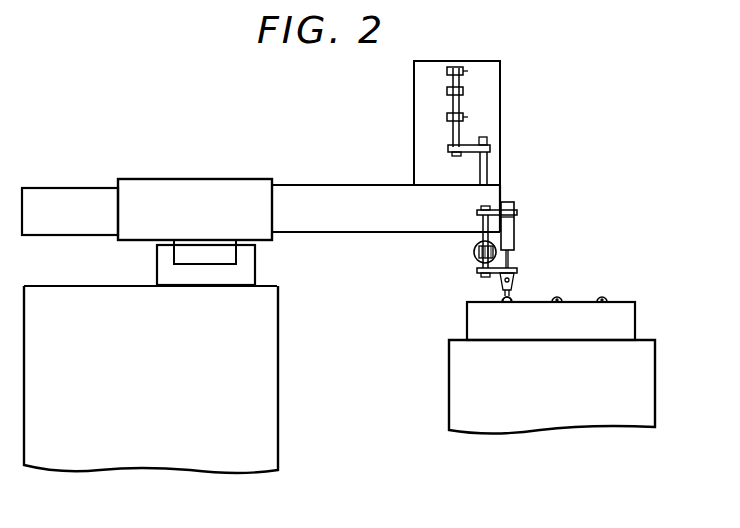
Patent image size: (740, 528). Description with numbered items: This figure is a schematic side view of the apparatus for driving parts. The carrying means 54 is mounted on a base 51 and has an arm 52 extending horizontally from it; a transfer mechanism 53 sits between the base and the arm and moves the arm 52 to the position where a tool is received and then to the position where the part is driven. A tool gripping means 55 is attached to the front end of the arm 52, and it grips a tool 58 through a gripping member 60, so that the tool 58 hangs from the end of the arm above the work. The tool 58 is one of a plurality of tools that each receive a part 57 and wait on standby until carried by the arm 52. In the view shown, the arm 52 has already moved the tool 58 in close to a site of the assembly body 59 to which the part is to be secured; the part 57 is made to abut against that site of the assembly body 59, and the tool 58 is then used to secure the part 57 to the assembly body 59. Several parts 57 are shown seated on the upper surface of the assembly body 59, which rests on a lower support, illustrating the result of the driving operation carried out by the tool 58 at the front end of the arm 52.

The base 51 is at (279, 346).
The arm 52 is at (334, 185).
The transfer mechanism 53 is at (256, 262).
The carrying means 54 is at (279, 300).
The tool gripping means 55 is at (473, 252).
The part 57 is at (605, 296).
The tool 58 is at (515, 228).
The assembly body 59 is at (637, 312).
The gripping member 60 is at (480, 220).